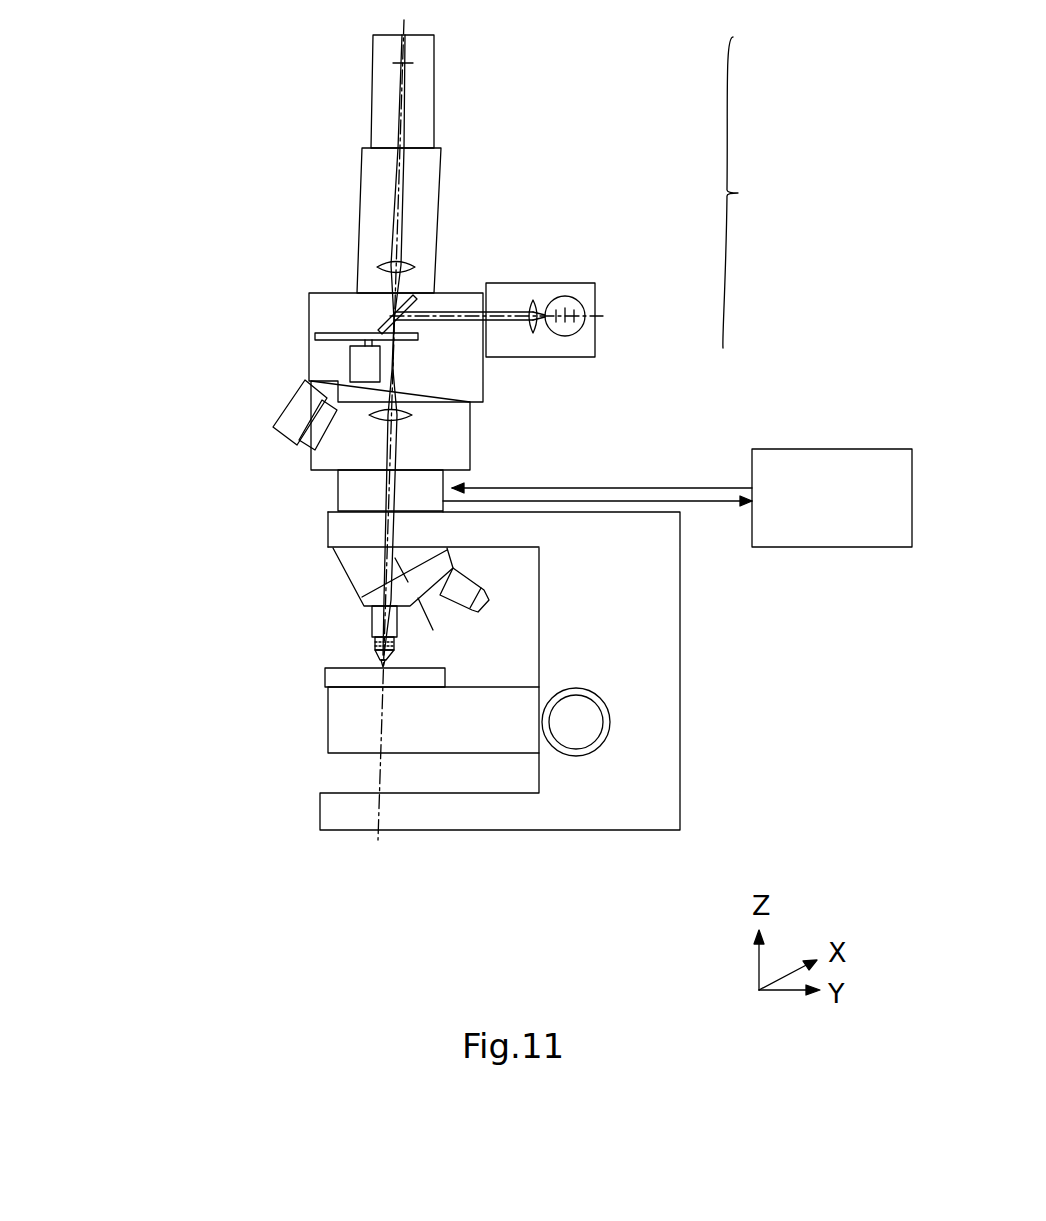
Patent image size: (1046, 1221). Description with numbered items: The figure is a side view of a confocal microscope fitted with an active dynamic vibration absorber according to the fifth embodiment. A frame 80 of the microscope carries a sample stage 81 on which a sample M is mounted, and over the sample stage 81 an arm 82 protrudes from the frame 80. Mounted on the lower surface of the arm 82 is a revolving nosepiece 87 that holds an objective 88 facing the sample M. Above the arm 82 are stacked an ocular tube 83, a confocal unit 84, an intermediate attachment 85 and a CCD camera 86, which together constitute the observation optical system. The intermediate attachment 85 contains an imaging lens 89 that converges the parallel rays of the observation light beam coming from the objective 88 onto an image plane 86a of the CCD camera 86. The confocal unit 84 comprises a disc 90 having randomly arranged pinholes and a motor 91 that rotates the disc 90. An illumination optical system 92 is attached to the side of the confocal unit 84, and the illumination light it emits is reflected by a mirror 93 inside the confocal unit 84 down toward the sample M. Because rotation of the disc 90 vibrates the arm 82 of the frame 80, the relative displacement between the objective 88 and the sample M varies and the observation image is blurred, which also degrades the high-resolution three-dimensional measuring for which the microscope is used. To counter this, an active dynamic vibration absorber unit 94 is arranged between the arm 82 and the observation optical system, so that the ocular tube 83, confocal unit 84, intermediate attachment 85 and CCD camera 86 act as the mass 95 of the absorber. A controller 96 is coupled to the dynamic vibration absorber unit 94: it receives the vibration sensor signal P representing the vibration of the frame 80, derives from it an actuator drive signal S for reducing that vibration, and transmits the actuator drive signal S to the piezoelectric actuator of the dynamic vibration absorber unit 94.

The frame 80 is at (663, 783).
The sample stage 81 is at (328, 734).
The arm 82 is at (328, 527).
The ocular tube 83 is at (470, 436).
The confocal unit 84 is at (466, 293).
The intermediate attachment 85 is at (441, 164).
The CCD camera 86 is at (434, 90).
The image plane 86a is at (413, 63).
The revolving nosepiece 87 is at (343, 576).
The objective 88 is at (372, 633).
The imaging lens 89 is at (387, 262).
The disc 90 is at (315, 333).
The motor 91 is at (350, 360).
The illumination optical system 92 is at (595, 292).
The mirror 93 is at (392, 318).
The dynamic vibration absorber unit 94 is at (338, 492).
The mass 95 is at (787, 192).
The controller 96 is at (836, 449).
The sample M is at (325, 677).
The actuator drive signal S is at (681, 488).
The vibration sensor signal P is at (725, 502).